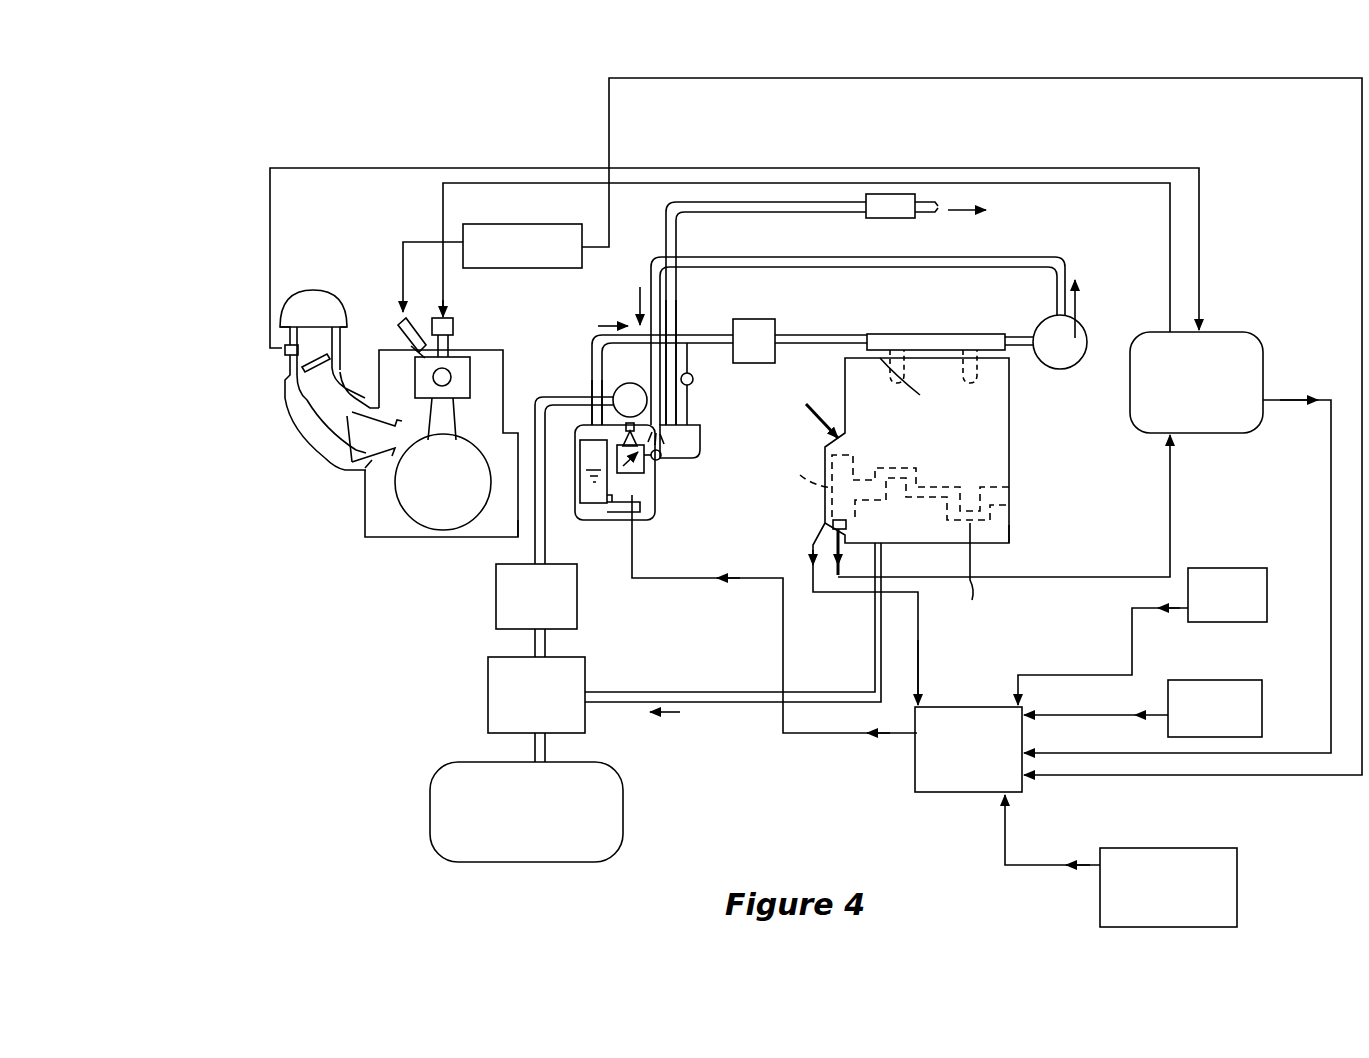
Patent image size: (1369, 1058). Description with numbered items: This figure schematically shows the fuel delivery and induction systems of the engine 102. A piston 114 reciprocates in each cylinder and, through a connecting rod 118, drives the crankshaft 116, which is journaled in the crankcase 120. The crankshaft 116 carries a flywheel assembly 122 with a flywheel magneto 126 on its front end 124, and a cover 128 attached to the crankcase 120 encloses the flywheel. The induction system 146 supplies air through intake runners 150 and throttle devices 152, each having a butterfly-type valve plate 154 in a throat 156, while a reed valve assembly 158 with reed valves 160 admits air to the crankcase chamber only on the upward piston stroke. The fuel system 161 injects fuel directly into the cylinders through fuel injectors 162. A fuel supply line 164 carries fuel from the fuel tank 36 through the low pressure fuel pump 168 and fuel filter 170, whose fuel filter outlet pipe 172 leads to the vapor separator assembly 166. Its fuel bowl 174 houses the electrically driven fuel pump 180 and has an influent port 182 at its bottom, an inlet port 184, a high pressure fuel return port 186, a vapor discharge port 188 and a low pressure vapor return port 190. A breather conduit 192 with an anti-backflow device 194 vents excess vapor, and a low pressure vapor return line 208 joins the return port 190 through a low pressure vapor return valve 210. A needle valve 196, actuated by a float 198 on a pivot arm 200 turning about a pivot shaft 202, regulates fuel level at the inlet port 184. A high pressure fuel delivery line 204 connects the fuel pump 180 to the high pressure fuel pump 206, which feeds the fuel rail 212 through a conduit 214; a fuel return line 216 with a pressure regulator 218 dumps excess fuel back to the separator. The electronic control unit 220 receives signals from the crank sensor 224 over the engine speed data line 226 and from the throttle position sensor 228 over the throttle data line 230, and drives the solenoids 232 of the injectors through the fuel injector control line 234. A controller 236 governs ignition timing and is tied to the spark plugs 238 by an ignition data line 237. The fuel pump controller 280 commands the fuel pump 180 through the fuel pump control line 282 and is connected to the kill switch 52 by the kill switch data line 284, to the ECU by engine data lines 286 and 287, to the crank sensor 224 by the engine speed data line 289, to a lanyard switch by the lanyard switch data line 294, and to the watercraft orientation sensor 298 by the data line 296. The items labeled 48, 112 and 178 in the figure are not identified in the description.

The fuel tank 36 is at (623, 812).
The battery 48 is at (1278, 586).
The kill switch 52 is at (1205, 680).
The engine 102 is at (1010, 445).
The cylinder head 112 is at (1010, 358).
The piston 114 is at (495, 348).
The crankshaft 116 is at (985, 569).
The connecting rod 118 is at (455, 440).
The crankcase 120 is at (385, 545).
The flywheel assembly 122 is at (816, 409).
The front end 124 is at (878, 452).
The flywheel magneto 126 is at (802, 466).
The cover 128 is at (826, 510).
The induction system 146 is at (172, 380).
The intake runners 150 is at (320, 460).
The throttle device 152 is at (246, 308).
The butterfly-type valve plate 154 is at (308, 412).
The throat 156 is at (285, 378).
The reed valve assembly 158 is at (378, 470).
The reed valves 160 is at (380, 395).
The fuel system 161 is at (697, 142).
The fuel injectors 162 is at (450, 330).
The fuel supply line 164 is at (535, 742).
The vapor separator assembly 166 is at (660, 613).
The low pressure fuel pump 168 is at (488, 698).
The fuel filter 170 is at (495, 600).
The fuel filter outlet pipe 172 is at (583, 385).
The fuel bowl 174 is at (655, 510).
The return flow 178 is at (668, 712).
The electrically driven fuel pump 180 is at (590, 488).
The influent port 182 is at (615, 520).
The inlet port 184 is at (528, 432).
The high pressure fuel return port 186 is at (700, 444).
The vapor discharge port 188 is at (685, 430).
The low pressure vapor return port 190 is at (694, 420).
The breather conduit 192 is at (663, 198).
The anti-backflow device 194 is at (890, 194).
The needle valve 196 is at (555, 465).
The float 198 is at (630, 460).
The pivot arm 200 is at (632, 431).
The pivot shaft 202 is at (660, 455).
The high pressure fuel delivery line 204 is at (590, 338).
The high pressure fuel pump 206 is at (758, 319).
The low pressure vapor return line 208 is at (672, 340).
The low pressure vapor return valve 210 is at (690, 352).
The fuel rail 212 is at (940, 334).
The conduit 214 is at (828, 334).
The fuel return line 216 is at (1022, 257).
The pressure regulator 218 is at (1072, 335).
The electronic control unit 220 is at (1263, 370).
The crank sensor 224 is at (848, 525).
The engine speed data line 226 is at (1080, 590).
The throttle position sensor 228 is at (280, 358).
The throttle data line 230 is at (498, 166).
The solenoids 232 is at (433, 310).
The fuel injector control line 234 is at (855, 182).
The controller 236 is at (488, 224).
The ignition data line 237 is at (448, 272).
The spark plugs 238 is at (402, 338).
The fuel pump controller 280 is at (990, 707).
The fuel pump control line 282 is at (790, 690).
The kill switch data line 284 is at (1085, 714).
The engine data line 286 is at (1331, 460).
The engine data line 287 is at (1205, 778).
The engine speed data line 289 is at (925, 665).
The lanyard switch data line 294 is at (1132, 640).
The data line 296 is at (1040, 866).
The watercraft orientation sensor 298 is at (1237, 882).